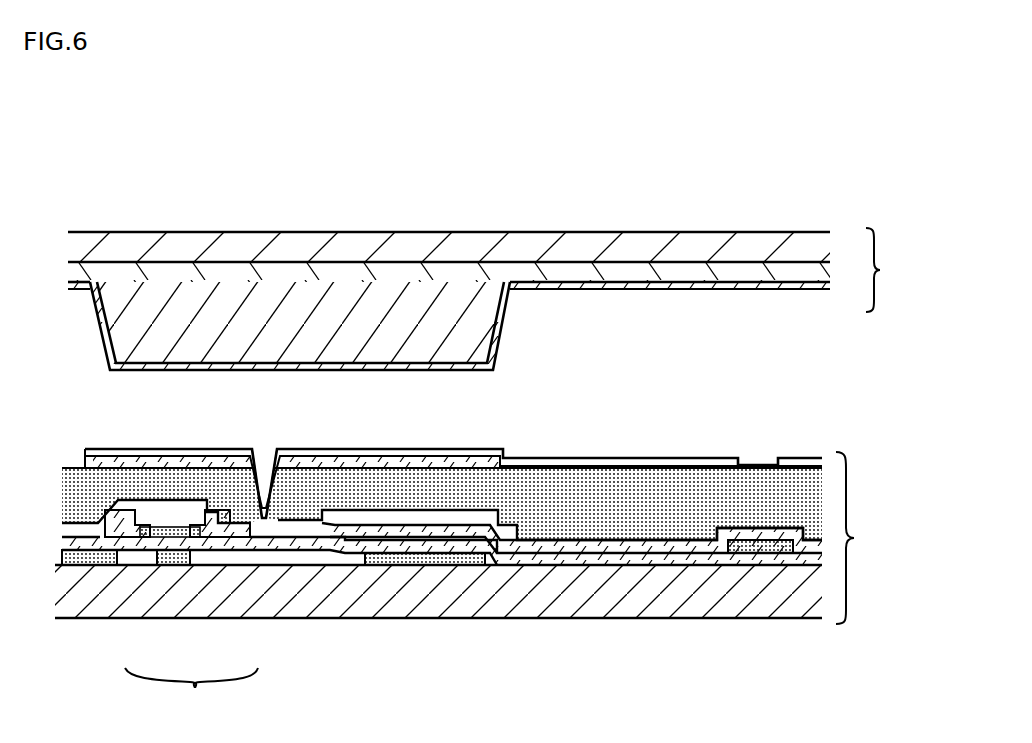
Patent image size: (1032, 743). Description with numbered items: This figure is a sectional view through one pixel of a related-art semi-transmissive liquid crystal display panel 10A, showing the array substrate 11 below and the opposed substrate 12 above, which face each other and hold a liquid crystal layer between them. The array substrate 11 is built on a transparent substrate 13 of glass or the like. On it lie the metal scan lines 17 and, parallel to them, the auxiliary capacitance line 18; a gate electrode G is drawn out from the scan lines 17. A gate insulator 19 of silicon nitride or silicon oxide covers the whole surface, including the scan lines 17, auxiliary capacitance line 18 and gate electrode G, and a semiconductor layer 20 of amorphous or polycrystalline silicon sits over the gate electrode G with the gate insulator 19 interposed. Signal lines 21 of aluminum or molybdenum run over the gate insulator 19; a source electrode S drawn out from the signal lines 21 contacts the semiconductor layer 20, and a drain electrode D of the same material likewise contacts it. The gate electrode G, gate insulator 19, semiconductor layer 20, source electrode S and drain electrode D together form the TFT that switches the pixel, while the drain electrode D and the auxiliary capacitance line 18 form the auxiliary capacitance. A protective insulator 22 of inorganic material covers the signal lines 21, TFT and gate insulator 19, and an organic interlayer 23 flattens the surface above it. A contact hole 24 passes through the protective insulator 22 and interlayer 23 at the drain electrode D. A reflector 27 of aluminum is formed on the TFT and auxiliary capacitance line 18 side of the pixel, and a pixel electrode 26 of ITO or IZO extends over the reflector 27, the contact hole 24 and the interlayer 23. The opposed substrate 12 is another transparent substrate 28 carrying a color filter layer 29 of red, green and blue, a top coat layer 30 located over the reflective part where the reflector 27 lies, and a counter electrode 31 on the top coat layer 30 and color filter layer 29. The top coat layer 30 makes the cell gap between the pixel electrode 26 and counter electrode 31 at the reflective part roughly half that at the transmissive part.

The semi-transmissive liquid crystal display panel 10A is at (122, 135).
The array substrate 11 is at (875, 538).
The opposed substrate 12 is at (894, 270).
The transparent substrate 13 is at (525, 596).
The scan lines 17 is at (90, 560).
The auxiliary capacitance line 18 is at (410, 556).
The gate insulator 19 is at (658, 560).
The semiconductor layer 20 is at (190, 538).
The signal lines 21 is at (745, 553).
The protective insulator 22 is at (600, 555).
The interlayer 23 is at (636, 527).
The contact hole 24 is at (272, 449).
The pixel electrode 26 is at (158, 453).
The reflector 27 is at (430, 463).
The transparent substrate 28 is at (545, 232).
The color filter layer 29 is at (645, 268).
The top coat layer 30 is at (250, 302).
The counter electrode 31 is at (760, 285).
The source electrode S is at (122, 546).
The gate electrode G is at (162, 562).
The drain electrode D is at (240, 532).
The thin film transistor TFT is at (191, 696).